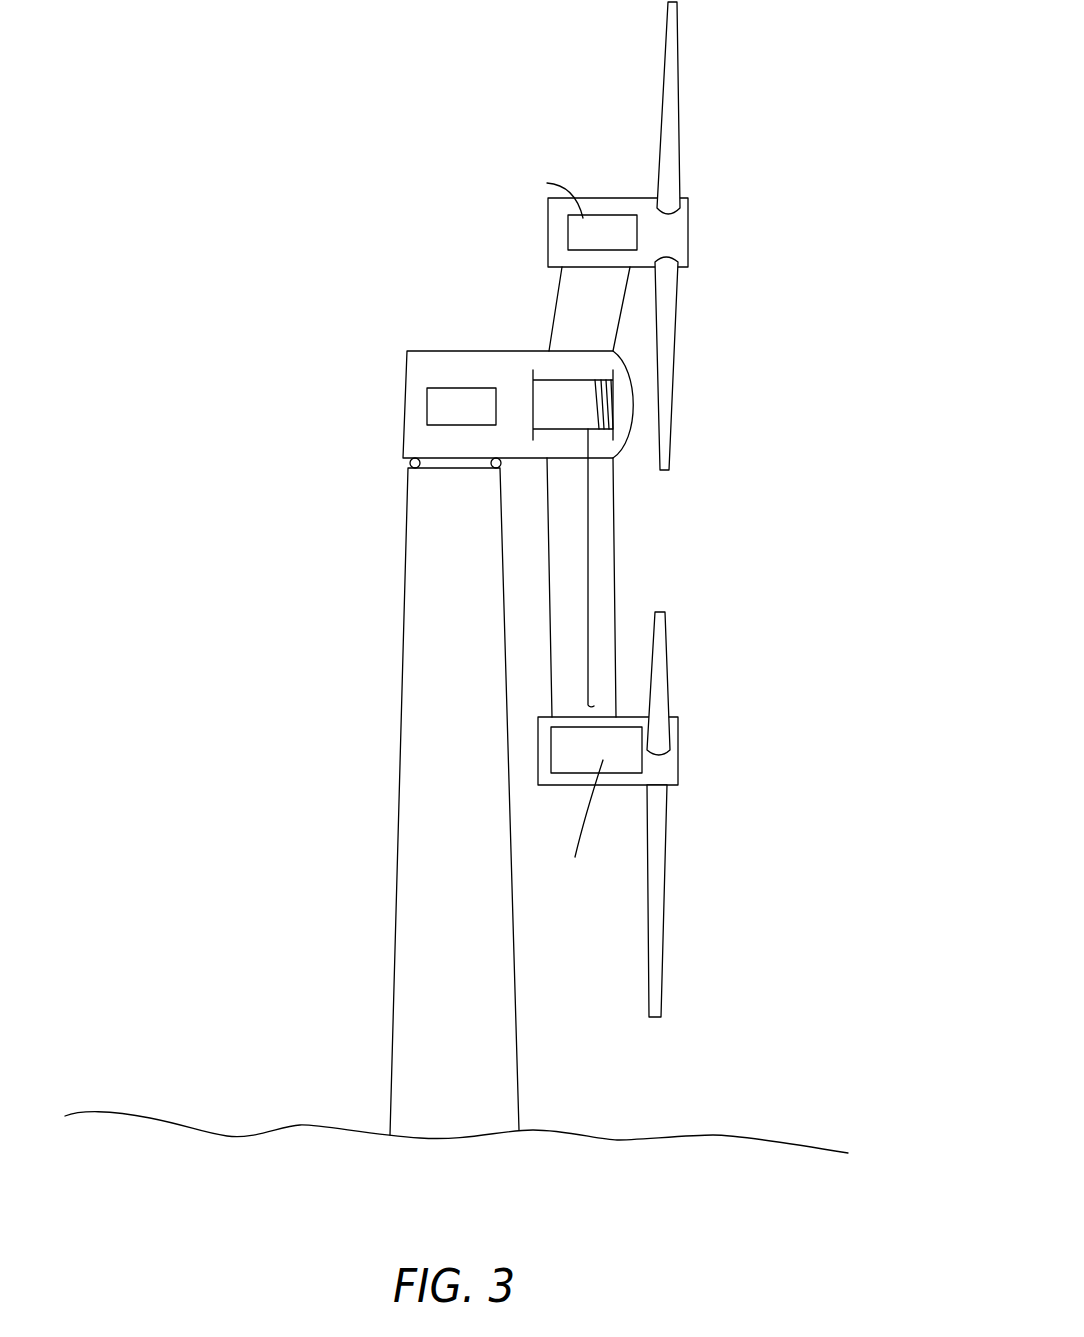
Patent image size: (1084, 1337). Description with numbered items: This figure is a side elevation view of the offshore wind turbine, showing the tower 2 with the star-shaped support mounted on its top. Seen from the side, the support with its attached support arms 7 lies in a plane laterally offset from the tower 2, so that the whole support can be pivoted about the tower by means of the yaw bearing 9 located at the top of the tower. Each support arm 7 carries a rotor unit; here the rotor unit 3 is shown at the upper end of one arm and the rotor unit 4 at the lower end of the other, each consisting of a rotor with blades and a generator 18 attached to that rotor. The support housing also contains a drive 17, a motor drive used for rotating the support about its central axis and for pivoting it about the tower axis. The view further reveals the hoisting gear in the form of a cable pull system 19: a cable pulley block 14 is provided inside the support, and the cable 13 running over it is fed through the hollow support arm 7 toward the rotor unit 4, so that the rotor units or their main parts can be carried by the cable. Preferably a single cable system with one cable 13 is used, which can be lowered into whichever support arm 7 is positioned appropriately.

The tower 2 is at (425, 766).
The rotor unit 3 is at (681, 240).
The rotor unit 4 is at (672, 760).
The support arm 7 is at (575, 303).
The yaw bearing 9 is at (403, 463).
The cable 13 is at (588, 572).
The cable pulley block 14 is at (555, 388).
The drive 17 is at (440, 392).
The generator 18 is at (595, 218).
The cable pull system 19 is at (608, 509).